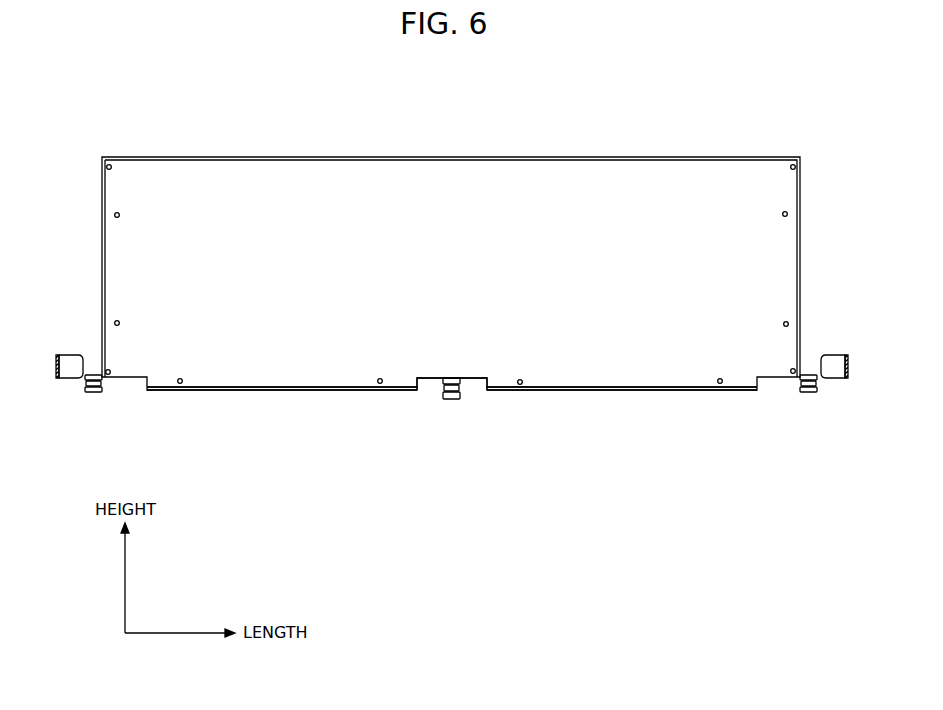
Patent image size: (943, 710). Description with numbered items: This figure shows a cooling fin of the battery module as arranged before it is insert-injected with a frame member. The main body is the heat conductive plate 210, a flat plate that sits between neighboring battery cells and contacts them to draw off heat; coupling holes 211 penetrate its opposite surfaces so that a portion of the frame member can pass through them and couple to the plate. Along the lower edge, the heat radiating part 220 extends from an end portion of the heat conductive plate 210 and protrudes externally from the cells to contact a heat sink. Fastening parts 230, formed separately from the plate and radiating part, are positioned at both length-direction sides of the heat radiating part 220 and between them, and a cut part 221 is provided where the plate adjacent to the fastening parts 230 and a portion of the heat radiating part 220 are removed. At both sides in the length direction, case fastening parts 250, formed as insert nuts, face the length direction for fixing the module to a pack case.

The heat conductive plate 210 is at (678, 175).
The coupling holes 211 is at (789, 212).
The heat radiating part 220 is at (325, 392).
The cut part 221 is at (492, 385).
The fastening parts 230 is at (90, 395).
The case fastening parts 250 is at (72, 352).